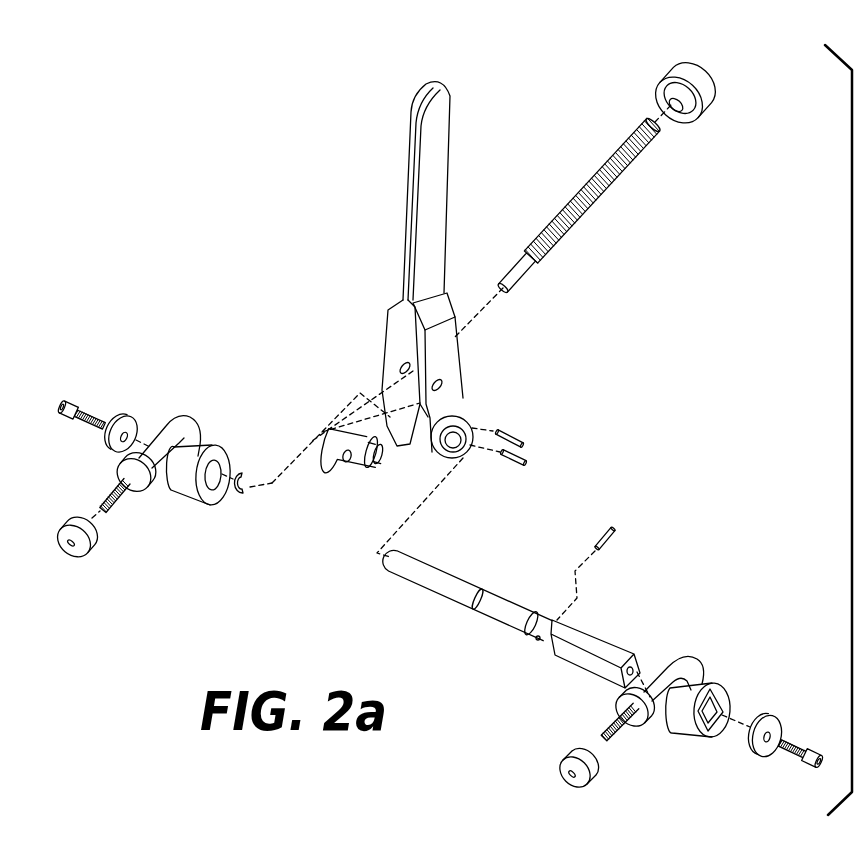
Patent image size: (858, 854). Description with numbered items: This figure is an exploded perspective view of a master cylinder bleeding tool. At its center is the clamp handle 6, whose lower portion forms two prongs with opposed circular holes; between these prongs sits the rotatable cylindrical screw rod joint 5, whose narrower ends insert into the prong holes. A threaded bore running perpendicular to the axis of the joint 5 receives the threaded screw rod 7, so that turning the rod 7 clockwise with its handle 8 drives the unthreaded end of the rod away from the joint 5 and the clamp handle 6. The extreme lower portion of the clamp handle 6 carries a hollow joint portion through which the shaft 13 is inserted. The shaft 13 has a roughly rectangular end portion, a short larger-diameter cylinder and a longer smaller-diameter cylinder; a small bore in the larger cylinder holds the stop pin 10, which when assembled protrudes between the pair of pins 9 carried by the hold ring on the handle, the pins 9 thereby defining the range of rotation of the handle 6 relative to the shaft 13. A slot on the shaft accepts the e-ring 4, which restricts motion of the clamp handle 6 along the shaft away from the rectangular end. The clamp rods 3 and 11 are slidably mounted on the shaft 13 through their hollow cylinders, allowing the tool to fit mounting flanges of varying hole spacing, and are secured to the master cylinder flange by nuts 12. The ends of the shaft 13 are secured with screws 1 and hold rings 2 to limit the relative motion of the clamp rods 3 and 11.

The screws 1 is at (73, 402).
The hold rings 2 is at (127, 418).
The clamp rod 3 is at (187, 423).
The e-ring 4 is at (242, 473).
The screw rod joint 5 is at (347, 430).
The clamp handle 6 is at (426, 243).
The screw rod 7 is at (560, 226).
The handle 8 is at (697, 108).
The pins 9 is at (520, 456).
The stop pin 10 is at (613, 540).
The clamp rod 11 is at (680, 702).
The nuts 12 is at (83, 557).
The shaft 13 is at (505, 617).